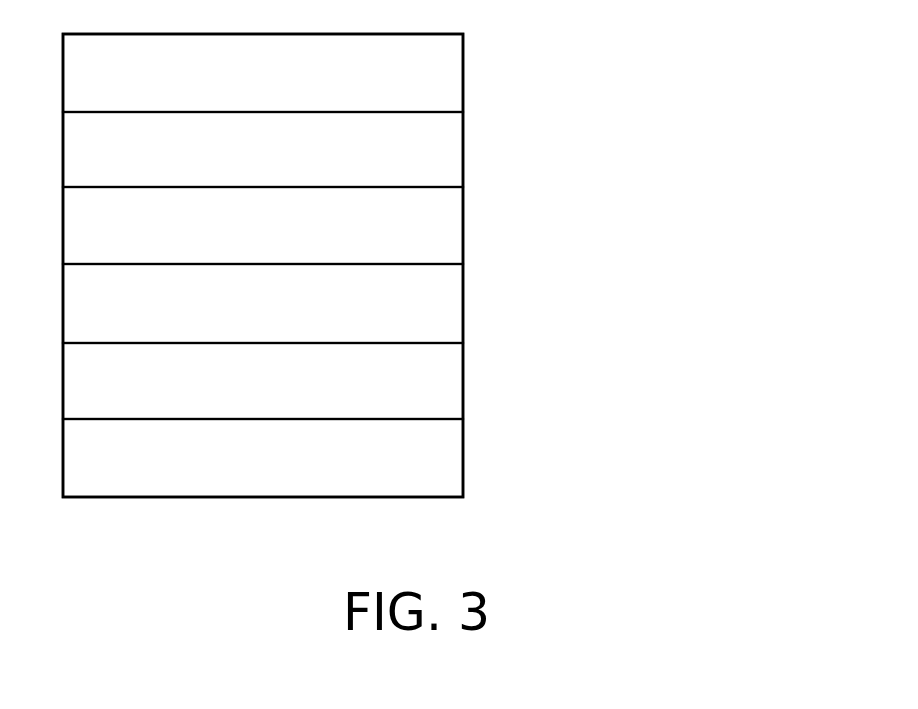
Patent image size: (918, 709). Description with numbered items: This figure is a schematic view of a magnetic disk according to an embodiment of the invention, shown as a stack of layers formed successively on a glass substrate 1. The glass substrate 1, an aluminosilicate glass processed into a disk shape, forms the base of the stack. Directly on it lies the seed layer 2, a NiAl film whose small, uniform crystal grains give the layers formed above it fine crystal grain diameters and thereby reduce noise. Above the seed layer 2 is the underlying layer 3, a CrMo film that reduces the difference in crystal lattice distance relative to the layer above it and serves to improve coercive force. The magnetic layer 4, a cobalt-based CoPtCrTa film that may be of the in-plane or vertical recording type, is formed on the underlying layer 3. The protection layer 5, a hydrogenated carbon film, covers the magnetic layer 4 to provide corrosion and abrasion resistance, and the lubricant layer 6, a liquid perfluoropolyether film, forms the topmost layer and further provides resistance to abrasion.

The glass substrate 1 is at (463, 460).
The seed layer 2 is at (463, 382).
The underlying layer 3 is at (463, 303).
The magnetic layer 4 is at (463, 228).
The protection layer 5 is at (463, 156).
The lubricant layer 6 is at (463, 83).